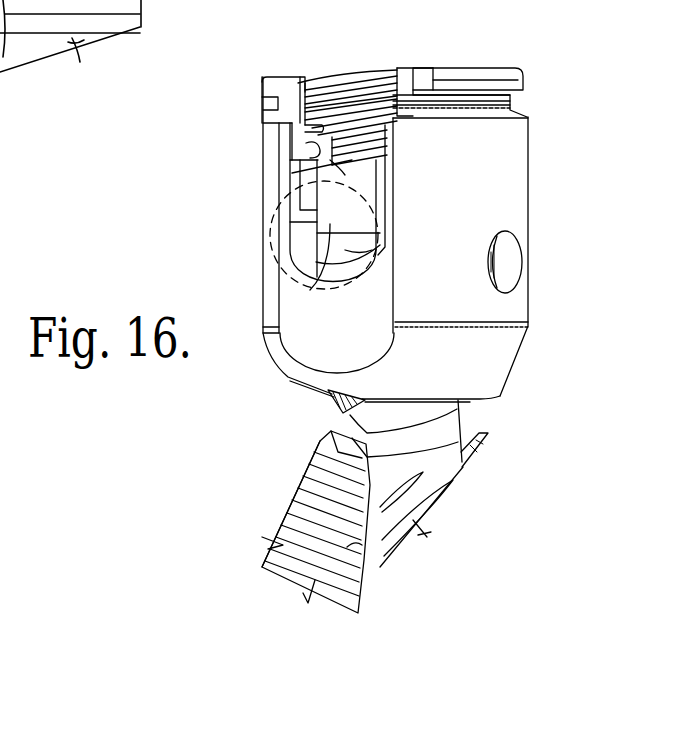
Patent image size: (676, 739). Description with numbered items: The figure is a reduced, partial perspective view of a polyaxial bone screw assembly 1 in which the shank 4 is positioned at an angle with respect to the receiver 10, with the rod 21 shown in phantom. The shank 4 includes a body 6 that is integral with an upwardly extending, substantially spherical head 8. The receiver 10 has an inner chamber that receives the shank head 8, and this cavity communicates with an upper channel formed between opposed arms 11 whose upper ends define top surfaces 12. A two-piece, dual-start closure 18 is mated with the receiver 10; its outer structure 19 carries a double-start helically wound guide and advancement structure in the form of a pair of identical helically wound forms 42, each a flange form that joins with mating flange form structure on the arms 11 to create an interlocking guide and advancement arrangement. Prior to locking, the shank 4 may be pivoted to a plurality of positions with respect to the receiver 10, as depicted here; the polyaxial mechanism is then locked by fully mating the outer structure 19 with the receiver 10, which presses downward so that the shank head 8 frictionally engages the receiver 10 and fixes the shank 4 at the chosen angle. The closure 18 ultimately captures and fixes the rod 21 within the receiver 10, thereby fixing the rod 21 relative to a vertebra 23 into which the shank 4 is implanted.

The polyaxial bone screw assembly 1 is at (520, 391).
The shank 4 is at (365, 443).
The body 6 is at (347, 547).
The head 8 is at (328, 393).
The receiver 10 is at (527, 204).
The arms 11 is at (515, 138).
The top surfaces 12 is at (302, 77).
The closure 18 is at (366, 47).
The outer structure 19 is at (334, 85).
The rod 21 is at (265, 185).
The vertebra 23 is at (317, 443).
The helically wound forms 42 is at (318, 129).